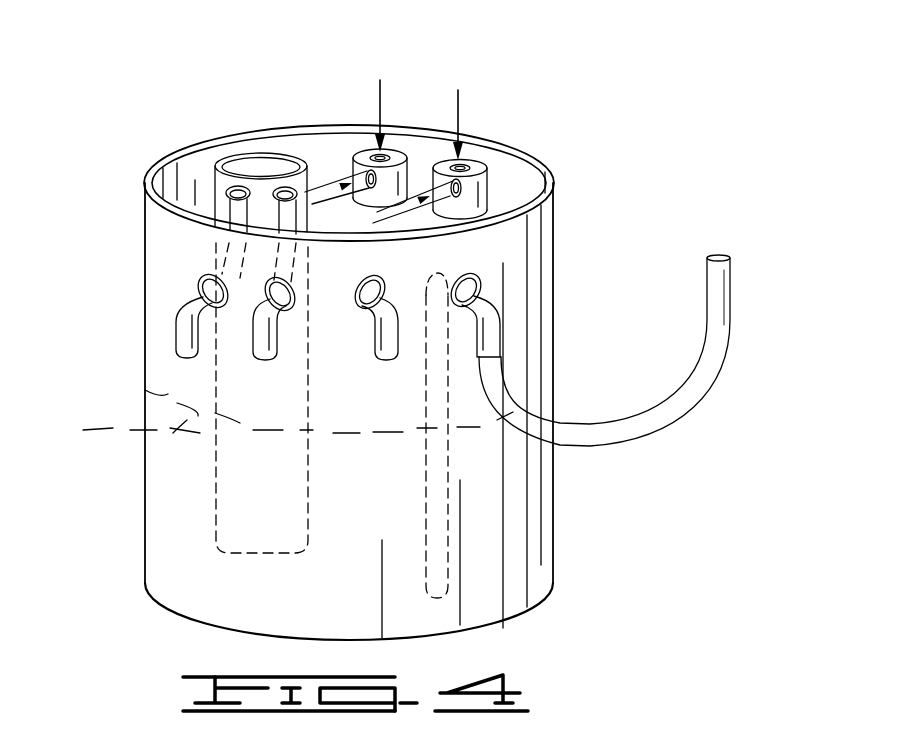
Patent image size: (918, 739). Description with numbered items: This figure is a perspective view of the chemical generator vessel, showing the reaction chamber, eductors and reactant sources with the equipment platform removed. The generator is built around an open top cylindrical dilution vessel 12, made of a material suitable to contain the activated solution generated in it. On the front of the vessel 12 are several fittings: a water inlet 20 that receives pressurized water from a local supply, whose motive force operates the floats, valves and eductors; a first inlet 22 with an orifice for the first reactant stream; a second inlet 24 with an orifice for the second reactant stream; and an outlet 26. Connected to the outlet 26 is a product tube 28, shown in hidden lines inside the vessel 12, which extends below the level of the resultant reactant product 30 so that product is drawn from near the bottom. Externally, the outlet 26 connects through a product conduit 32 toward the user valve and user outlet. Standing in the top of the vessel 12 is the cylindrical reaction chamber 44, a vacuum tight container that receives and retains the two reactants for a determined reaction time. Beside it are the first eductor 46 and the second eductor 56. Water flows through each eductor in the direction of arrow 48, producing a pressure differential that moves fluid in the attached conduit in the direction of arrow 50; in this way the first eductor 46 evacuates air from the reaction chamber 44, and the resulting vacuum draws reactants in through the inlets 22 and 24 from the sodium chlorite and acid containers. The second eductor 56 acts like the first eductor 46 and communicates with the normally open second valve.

The dilution vessel 12 is at (147, 524).
The water inlet 20 is at (400, 338).
The first inlet 22 is at (187, 293).
The second inlet 24 is at (255, 342).
The outlet 26 is at (496, 300).
The product tube 28 is at (445, 537).
The resultant reactant product 30 is at (83, 430).
The product conduit 32 is at (730, 330).
The reaction chamber 44 is at (254, 162).
The first eductor 46 is at (364, 152).
The arrow 48 is at (380, 102).
The arrow 50 is at (335, 186).
The second eductor 56 is at (490, 185).